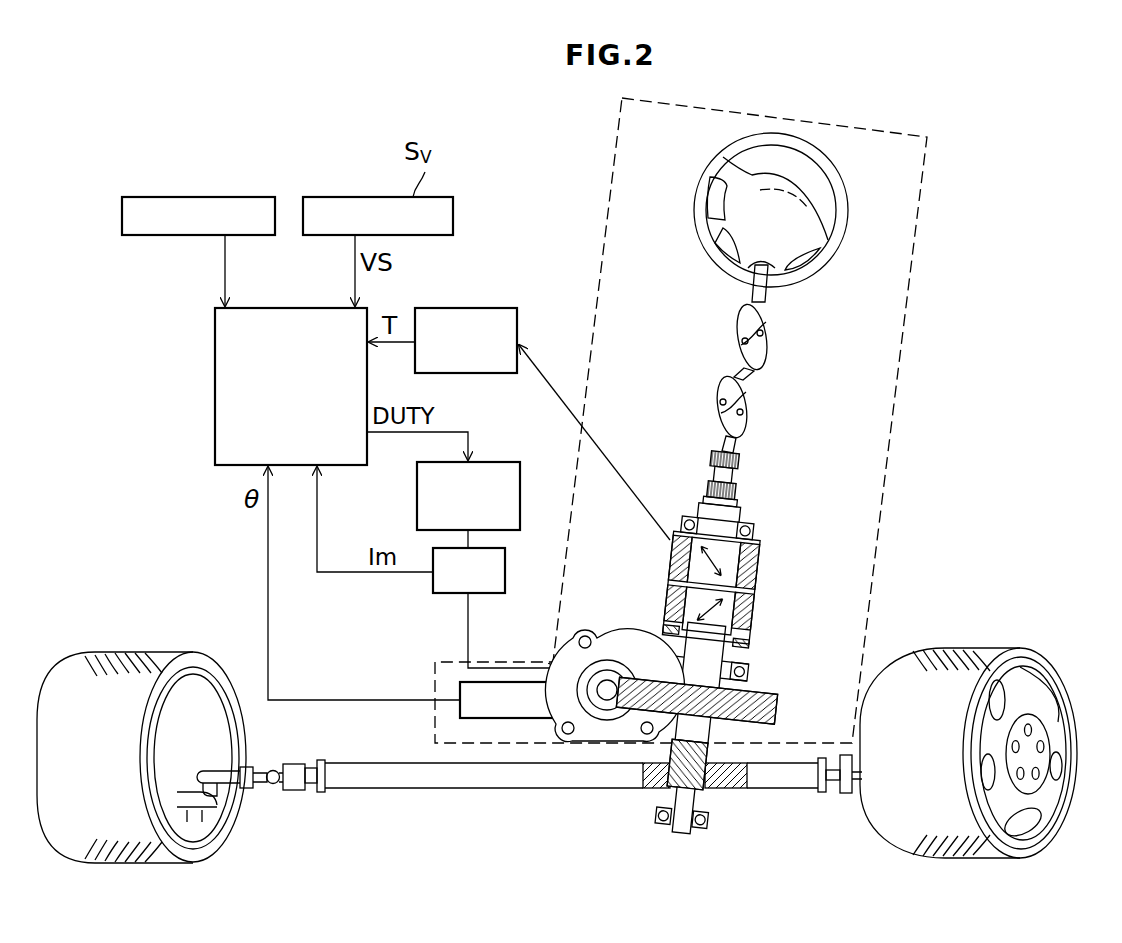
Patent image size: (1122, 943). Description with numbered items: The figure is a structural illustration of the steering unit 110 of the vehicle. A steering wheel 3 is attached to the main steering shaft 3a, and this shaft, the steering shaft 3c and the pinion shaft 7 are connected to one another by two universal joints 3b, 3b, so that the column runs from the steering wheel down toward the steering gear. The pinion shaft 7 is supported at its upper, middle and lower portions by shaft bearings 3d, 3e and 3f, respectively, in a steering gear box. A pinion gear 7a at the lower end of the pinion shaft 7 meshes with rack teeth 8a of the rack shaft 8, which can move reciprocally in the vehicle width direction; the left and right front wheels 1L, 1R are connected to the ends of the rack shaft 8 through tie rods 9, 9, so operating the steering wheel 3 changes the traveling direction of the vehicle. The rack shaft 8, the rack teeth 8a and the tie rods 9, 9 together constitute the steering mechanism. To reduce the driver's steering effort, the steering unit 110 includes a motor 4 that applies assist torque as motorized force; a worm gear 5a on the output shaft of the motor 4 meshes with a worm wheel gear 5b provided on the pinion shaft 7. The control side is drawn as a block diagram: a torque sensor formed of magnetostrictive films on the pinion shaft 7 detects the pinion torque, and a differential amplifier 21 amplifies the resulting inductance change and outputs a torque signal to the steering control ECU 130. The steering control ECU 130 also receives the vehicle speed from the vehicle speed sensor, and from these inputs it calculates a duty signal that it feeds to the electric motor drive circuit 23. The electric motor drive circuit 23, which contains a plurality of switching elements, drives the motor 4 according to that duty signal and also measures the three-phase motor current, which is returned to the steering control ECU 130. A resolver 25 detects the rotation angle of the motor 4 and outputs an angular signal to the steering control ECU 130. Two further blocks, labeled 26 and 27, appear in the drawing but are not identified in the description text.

The right front wheel 1R is at (103, 655).
The left front wheel 1L is at (1050, 660).
The steering wheel 3 is at (848, 218).
The main steering shaft 3a is at (770, 295).
The universal joint 3b is at (768, 350).
The steering shaft 3c is at (750, 378).
The shaft bearing 3d is at (758, 524).
The shaft bearing 3e is at (748, 665).
The shaft bearing 3f is at (710, 826).
The motor 4 is at (563, 658).
The worm gear 5a is at (607, 642).
The worm wheel gear 5b is at (785, 690).
The pinion shaft 7 is at (715, 731).
The pinion gear 7a is at (705, 793).
The rack shaft 8 is at (400, 790).
The rack teeth 8a is at (650, 790).
The tie rod 9 is at (255, 790).
The differential amplifier 21 is at (487, 308).
The electric motor drive circuit 23 is at (497, 462).
The resolver 25 is at (460, 710).
The vehicle state sensor 26 is at (160, 197).
The motor current detector 27 is at (440, 593).
The steering unit 110 is at (928, 160).
The steering control ECU 130 is at (215, 330).